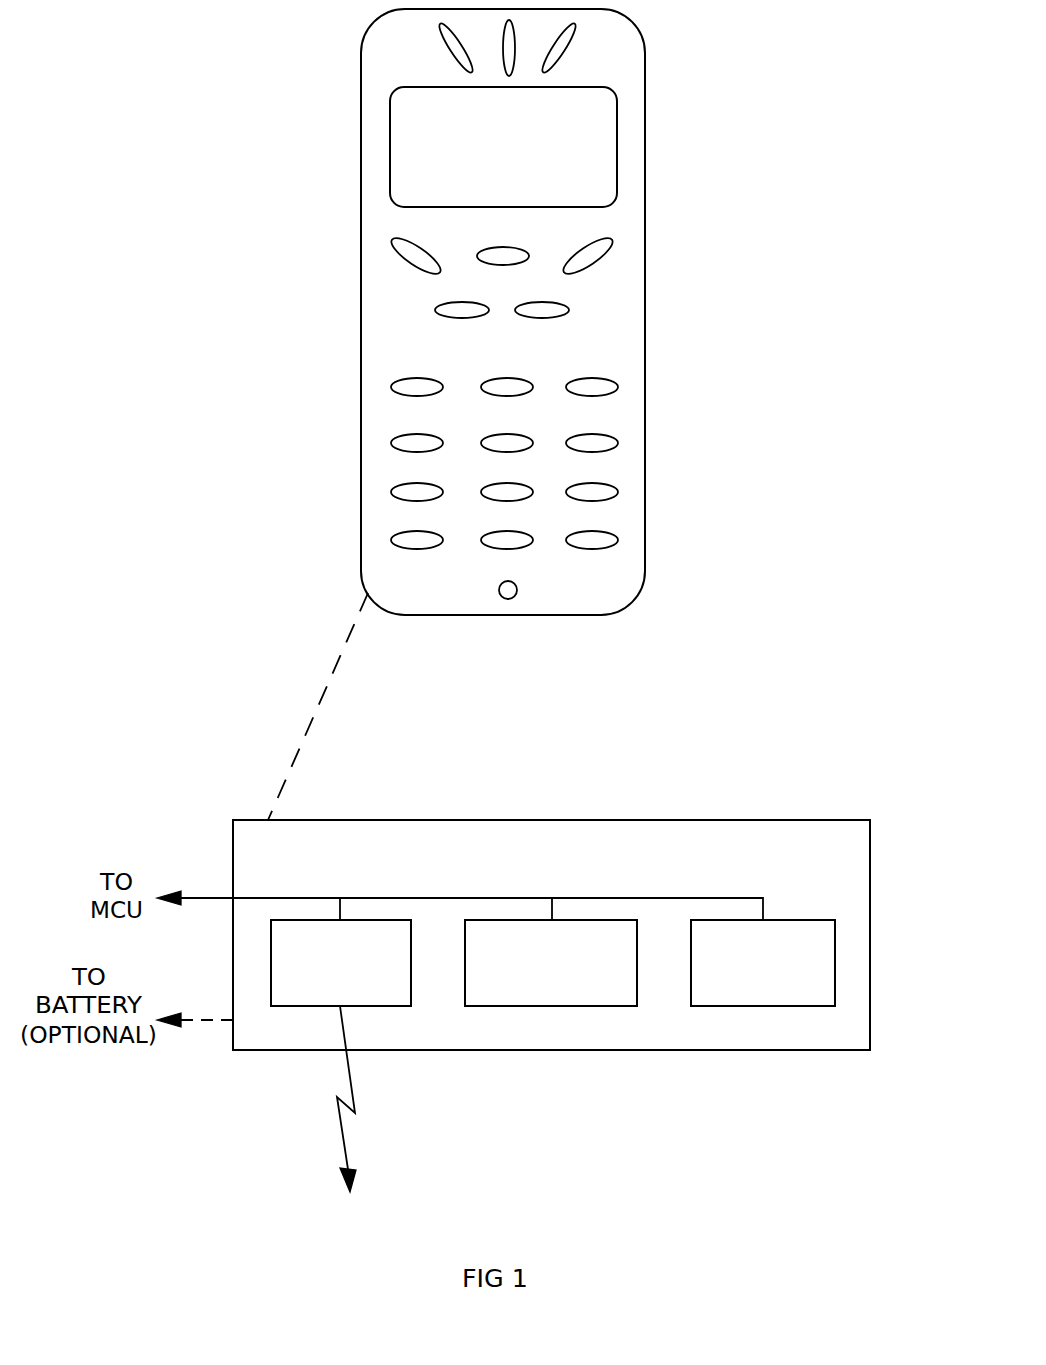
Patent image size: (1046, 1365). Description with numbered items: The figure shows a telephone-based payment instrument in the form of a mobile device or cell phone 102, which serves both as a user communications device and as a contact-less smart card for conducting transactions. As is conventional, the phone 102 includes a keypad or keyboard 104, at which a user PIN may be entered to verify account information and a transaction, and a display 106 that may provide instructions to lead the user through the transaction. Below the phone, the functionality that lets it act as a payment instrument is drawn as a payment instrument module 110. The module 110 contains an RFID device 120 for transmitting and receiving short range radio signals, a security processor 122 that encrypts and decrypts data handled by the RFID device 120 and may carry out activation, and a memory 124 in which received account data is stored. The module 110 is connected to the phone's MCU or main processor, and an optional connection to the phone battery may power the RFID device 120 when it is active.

The mobile device or cell phone 102 is at (645, 262).
The keypad or keyboard 104 is at (385, 567).
The display 106 is at (617, 124).
The payment instrument module 110 is at (667, 820).
The RFID device 120 is at (372, 1006).
The security processor 122 is at (525, 1006).
The memory 124 is at (748, 1006).